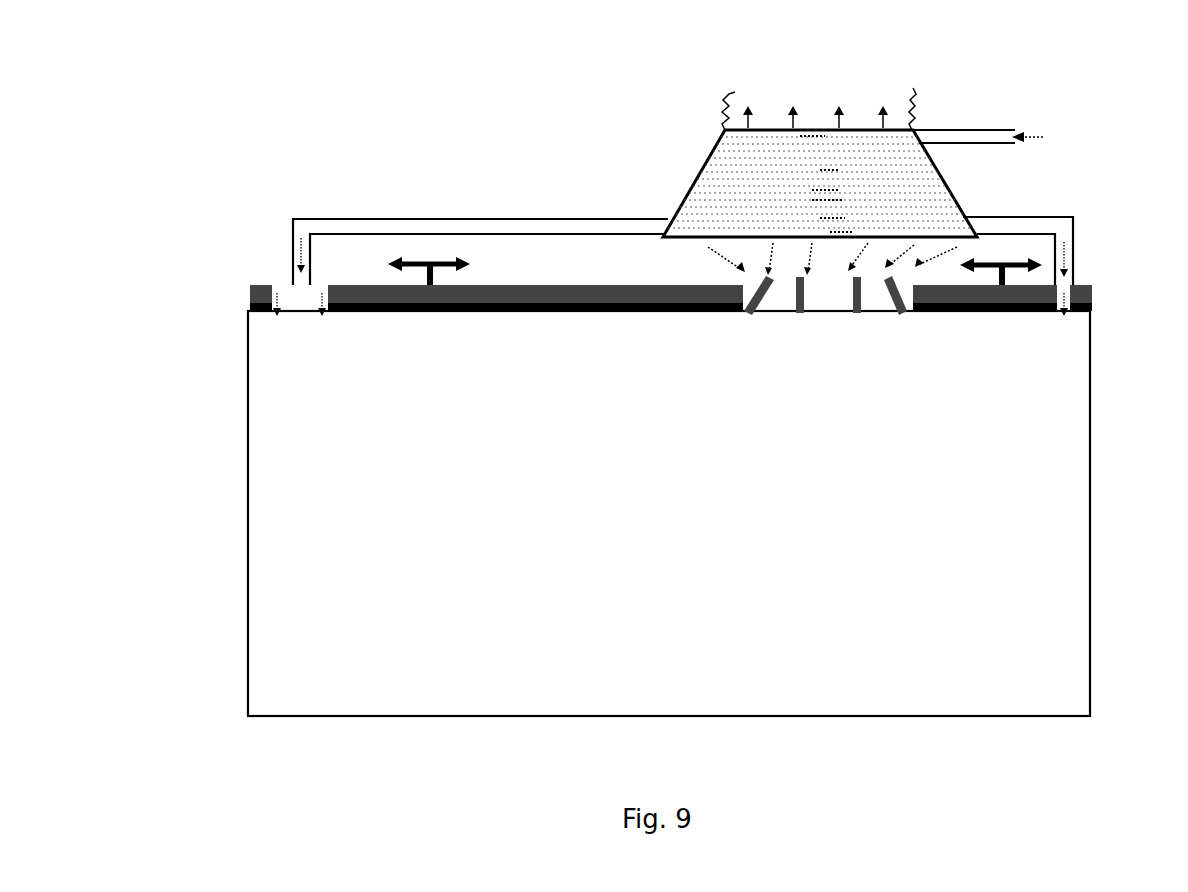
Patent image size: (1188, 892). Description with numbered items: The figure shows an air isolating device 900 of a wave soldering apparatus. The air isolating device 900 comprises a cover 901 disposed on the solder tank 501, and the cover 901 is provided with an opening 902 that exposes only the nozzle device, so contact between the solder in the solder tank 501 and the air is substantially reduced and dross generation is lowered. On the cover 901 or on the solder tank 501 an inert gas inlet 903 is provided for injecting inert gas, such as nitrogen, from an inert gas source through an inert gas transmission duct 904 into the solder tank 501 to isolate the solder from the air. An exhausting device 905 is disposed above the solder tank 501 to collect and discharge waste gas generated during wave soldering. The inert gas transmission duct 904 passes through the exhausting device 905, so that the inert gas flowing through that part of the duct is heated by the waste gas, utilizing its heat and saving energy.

The air isolating device 900 is at (172, 120).
The solder tank 501 is at (1056, 478).
The inert gas inlet 903 is at (1078, 285).
The inert gas transmission duct 904 is at (497, 228).
The cover 901 is at (1037, 290).
The opening 902 is at (750, 292).
The exhausting device 905 is at (957, 187).